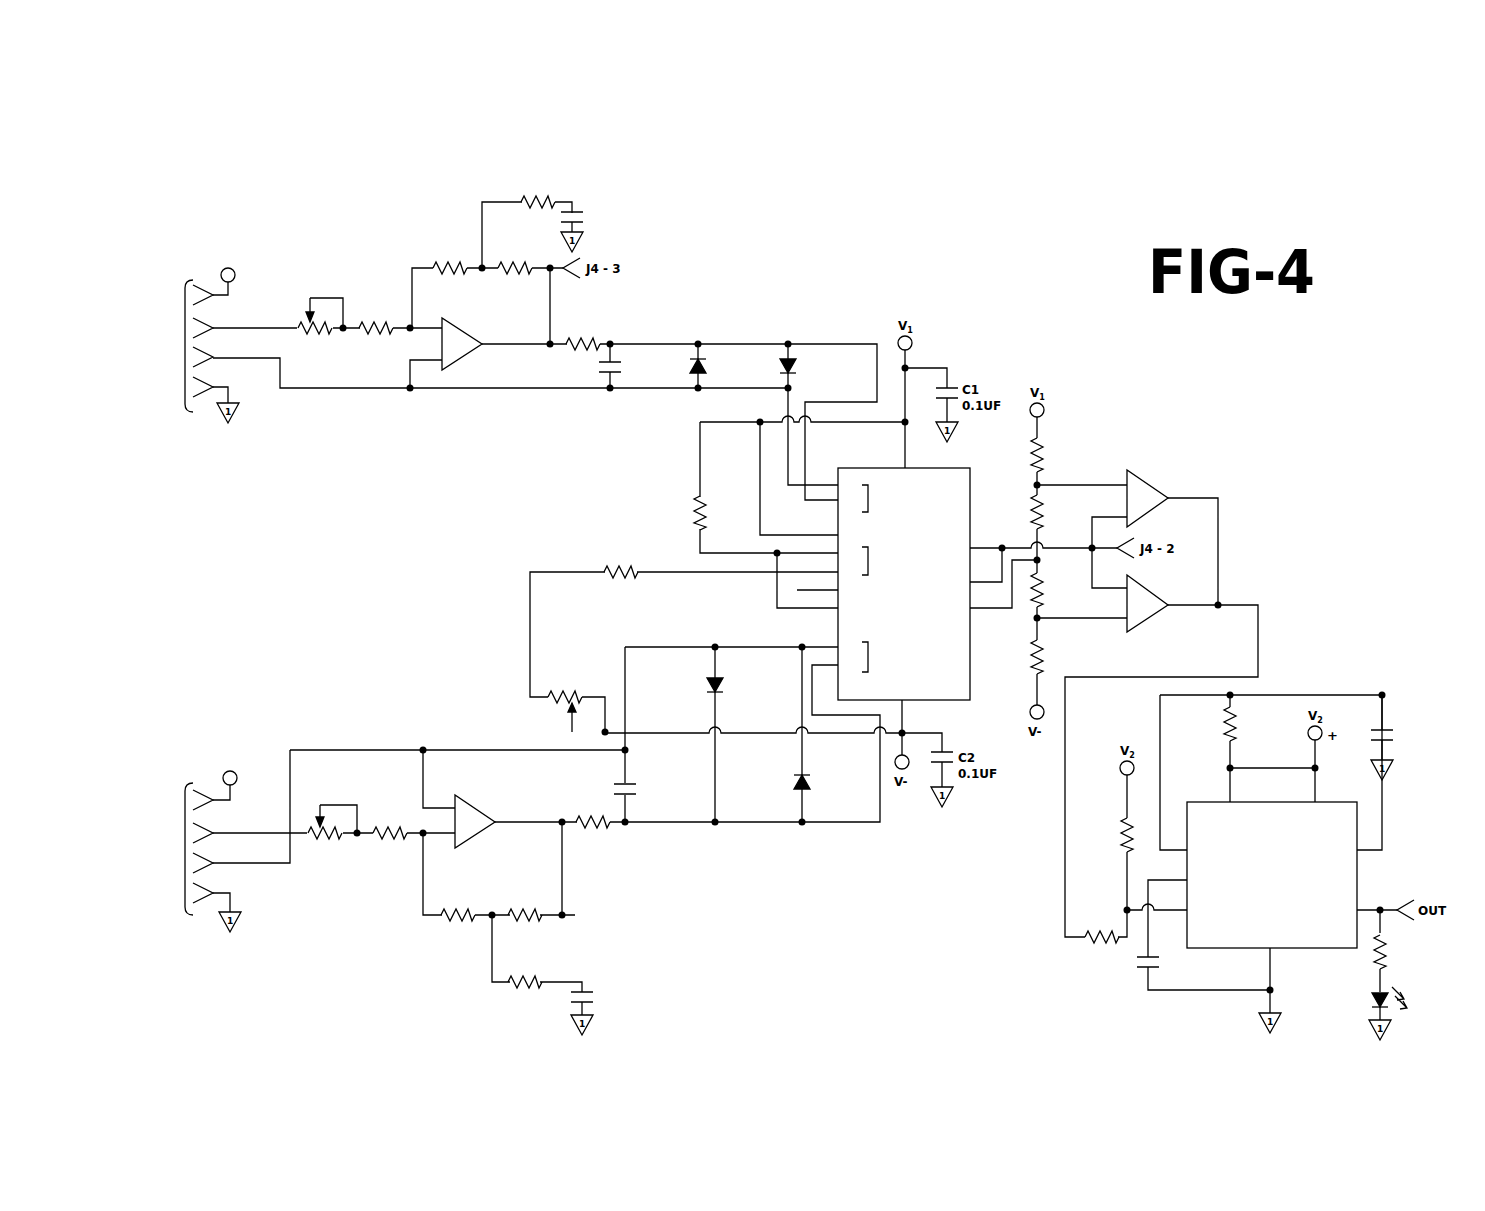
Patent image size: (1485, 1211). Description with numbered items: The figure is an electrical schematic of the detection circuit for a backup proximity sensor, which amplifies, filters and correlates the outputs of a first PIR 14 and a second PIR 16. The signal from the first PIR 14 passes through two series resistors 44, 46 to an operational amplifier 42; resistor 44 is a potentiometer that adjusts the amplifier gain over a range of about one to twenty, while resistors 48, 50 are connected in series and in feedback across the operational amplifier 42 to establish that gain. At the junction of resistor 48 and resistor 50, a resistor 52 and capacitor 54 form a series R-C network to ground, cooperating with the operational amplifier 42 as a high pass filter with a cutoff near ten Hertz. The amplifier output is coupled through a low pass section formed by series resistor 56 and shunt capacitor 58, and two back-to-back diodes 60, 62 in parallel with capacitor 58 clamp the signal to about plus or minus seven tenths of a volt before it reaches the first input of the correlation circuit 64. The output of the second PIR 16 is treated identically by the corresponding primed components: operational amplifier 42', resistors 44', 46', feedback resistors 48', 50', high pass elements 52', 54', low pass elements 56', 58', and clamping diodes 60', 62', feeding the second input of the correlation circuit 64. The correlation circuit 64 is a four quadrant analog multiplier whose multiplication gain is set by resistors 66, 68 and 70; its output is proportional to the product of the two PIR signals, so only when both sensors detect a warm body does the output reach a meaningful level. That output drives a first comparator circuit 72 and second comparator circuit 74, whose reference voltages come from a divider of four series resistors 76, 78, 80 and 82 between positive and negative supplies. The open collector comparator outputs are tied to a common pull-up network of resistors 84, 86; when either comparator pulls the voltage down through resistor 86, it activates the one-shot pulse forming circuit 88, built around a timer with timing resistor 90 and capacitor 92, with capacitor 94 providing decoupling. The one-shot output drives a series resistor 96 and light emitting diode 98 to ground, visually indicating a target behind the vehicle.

The first PIR 14 is at (188, 342).
The second PIR 16 is at (192, 838).
The operational amplifier 42 is at (484, 376).
The resistor 44 is at (316, 306).
The resistor 46 is at (370, 306).
The resistor 48 is at (421, 248).
The resistor 50 is at (480, 246).
The resistor 52 is at (500, 183).
The capacitor 54 is at (624, 216).
The series resistor 56 is at (616, 332).
The shunt capacitor 58 is at (624, 392).
The diode 60 is at (728, 337).
The diode 62 is at (817, 337).
The correlation circuit 64 is at (870, 468).
The resistor 66 is at (695, 510).
The resistor 68 is at (603, 570).
The resistor 70 is at (546, 700).
The first comparator circuit 72 is at (1130, 476).
The second comparator circuit 74 is at (1160, 612).
The resistor 76 is at (1042, 440).
The resistor 78 is at (1033, 520).
The resistor 80 is at (1035, 600).
The resistor 82 is at (1035, 665).
The pull-up resistor 84 is at (1085, 940).
The pull-up resistor 86 is at (1125, 830).
The one-shot pulse forming circuit 88 is at (1250, 955).
The timing resistor 90 is at (1237, 722).
The capacitor 92 is at (1398, 733).
The capacitor 94 is at (1150, 972).
The series resistor 96 is at (1390, 970).
The light emitting diode 98 is at (1375, 1003).
The operational amplifier 42' is at (483, 788).
The resistor 44' is at (355, 851).
The resistor 46' is at (387, 810).
The resistor 48' is at (418, 934).
The resistor 50' is at (581, 920).
The resistor 52' is at (463, 988).
The capacitor 54' is at (646, 1000).
The series resistor 56' is at (571, 807).
The shunt capacitor 58' is at (653, 833).
The diode 60' is at (714, 658).
The diode 62' is at (816, 831).